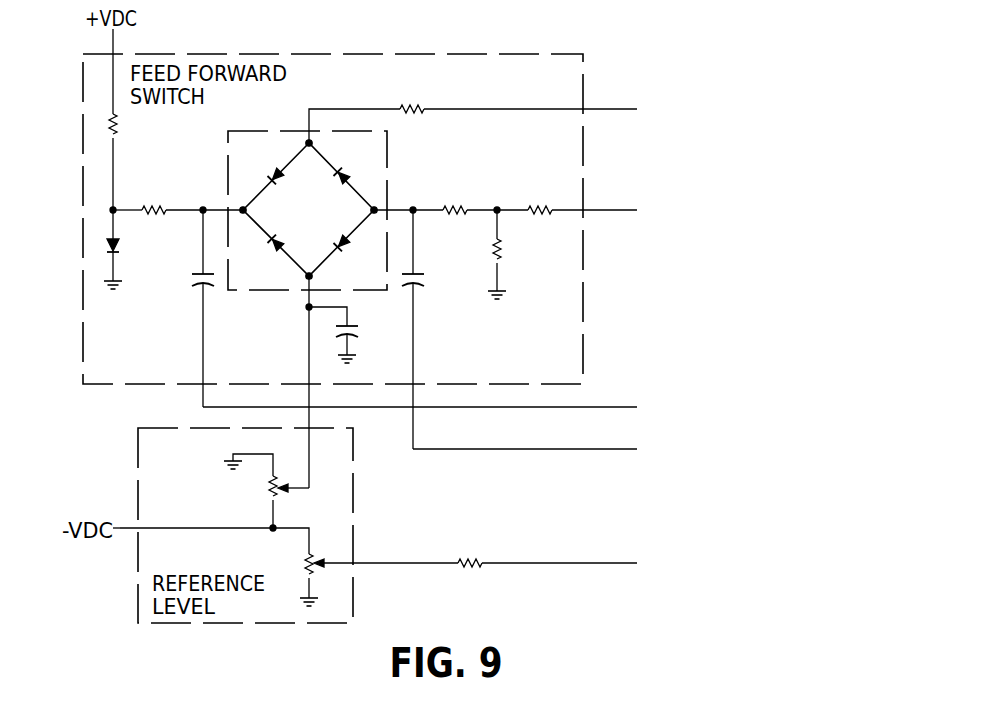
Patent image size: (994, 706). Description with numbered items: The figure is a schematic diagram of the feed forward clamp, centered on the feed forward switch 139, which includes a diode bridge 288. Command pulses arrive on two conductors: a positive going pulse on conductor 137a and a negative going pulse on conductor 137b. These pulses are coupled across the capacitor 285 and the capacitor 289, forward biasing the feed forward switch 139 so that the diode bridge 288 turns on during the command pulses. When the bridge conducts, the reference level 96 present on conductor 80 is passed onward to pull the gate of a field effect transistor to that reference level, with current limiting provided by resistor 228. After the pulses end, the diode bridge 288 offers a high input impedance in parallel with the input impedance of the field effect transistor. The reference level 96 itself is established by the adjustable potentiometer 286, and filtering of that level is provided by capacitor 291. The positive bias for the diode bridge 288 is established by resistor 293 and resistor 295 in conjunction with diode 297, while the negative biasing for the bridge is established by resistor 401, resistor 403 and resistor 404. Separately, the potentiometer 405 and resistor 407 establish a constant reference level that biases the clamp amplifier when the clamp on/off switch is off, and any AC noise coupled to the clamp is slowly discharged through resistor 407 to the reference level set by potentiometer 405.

The feed forward switch 139 is at (117, 383).
The resistor 293 is at (119, 126).
The resistor 295 is at (152, 205).
The diode 297 is at (119, 247).
The diode bridge 288 is at (282, 130).
The capacitor 289 is at (198, 283).
The resistor 228 is at (413, 106).
The resistor 401 is at (455, 207).
The resistor 403 is at (540, 207).
The resistor 404 is at (501, 250).
The capacitor 285 is at (424, 279).
The capacitor 291 is at (358, 333).
The conductor 80 is at (309, 421).
The conductor 137a is at (600, 406).
The conductor 137b is at (600, 448).
The reference level 96 is at (353, 485).
The potentiometer 286 is at (268, 490).
The potentiometer 405 is at (305, 562).
The resistor 407 is at (470, 559).